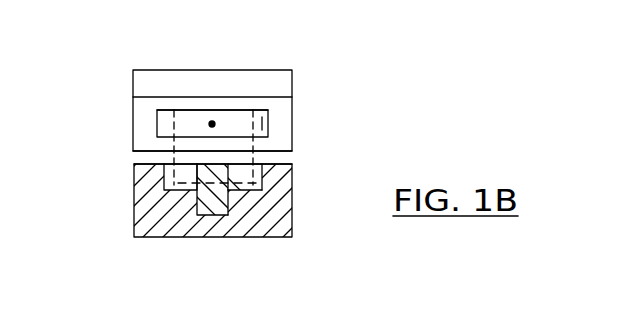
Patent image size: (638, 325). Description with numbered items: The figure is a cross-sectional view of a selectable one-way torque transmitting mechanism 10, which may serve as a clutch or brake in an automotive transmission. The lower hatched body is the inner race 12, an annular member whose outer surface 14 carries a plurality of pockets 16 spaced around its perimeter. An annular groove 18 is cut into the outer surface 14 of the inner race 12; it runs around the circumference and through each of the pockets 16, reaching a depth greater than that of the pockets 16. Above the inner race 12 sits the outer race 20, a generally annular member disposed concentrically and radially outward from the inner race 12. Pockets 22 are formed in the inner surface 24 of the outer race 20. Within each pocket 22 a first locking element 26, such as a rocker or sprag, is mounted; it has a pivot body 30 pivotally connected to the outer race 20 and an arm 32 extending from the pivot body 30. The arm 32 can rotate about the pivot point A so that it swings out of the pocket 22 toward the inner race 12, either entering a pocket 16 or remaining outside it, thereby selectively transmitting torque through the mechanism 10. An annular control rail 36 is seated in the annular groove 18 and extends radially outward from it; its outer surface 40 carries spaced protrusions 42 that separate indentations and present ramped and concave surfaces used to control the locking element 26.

The selectable one-way torque transmitting mechanism 10 is at (122, 56).
The inner race 12 is at (150, 215).
The outer surface 14 is at (281, 164).
The pockets 16 is at (247, 174).
The annular groove 18 is at (226, 200).
The outer race 20 is at (208, 70).
The pockets 22 is at (265, 121).
The inner surface 24 is at (143, 152).
The first locking element 26 is at (194, 110).
The pivot body 30 is at (228, 110).
The arm 32 is at (166, 177).
The control rail 36 is at (233, 174).
The outer surface 40 is at (227, 163).
The protrusions 42 is at (233, 186).
The pivot point A is at (208, 124).